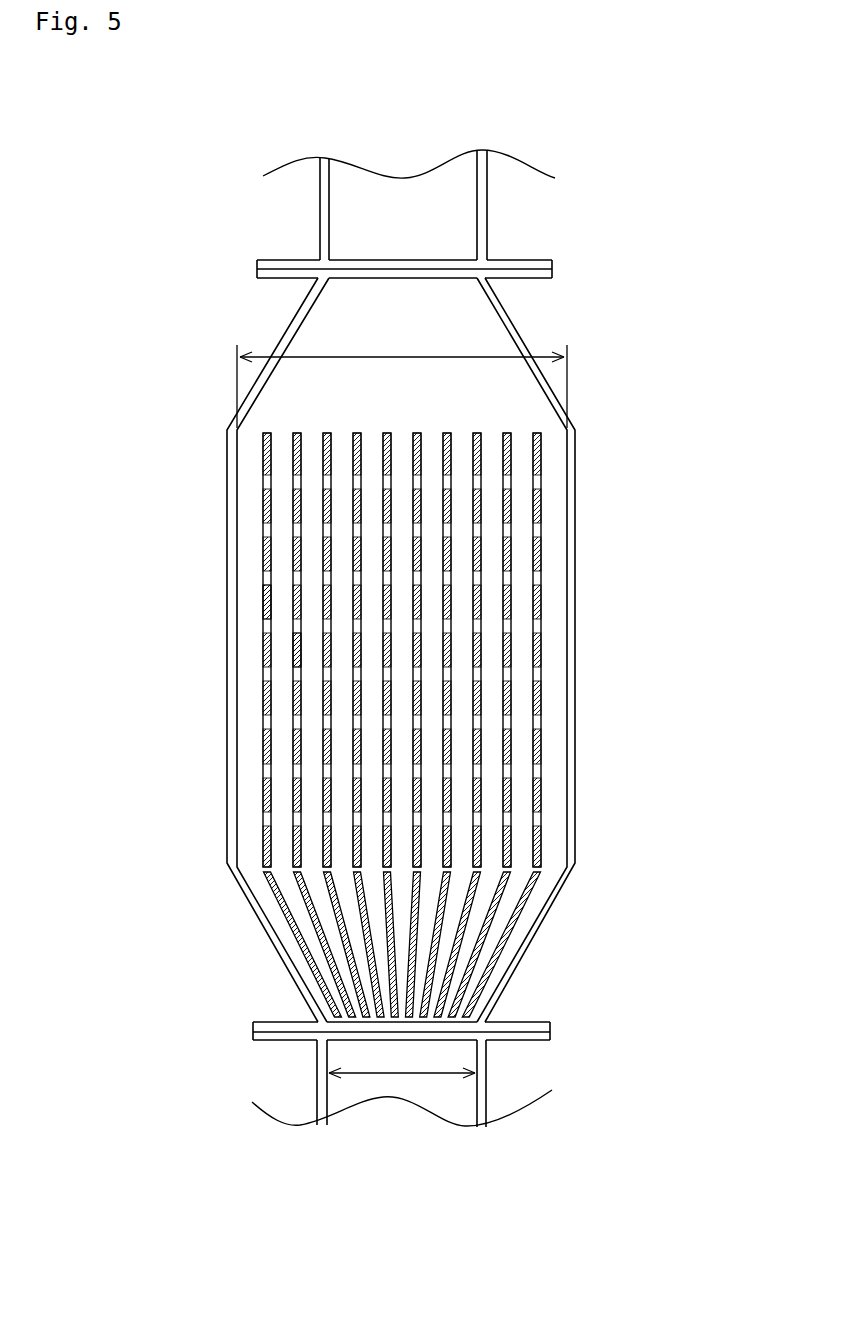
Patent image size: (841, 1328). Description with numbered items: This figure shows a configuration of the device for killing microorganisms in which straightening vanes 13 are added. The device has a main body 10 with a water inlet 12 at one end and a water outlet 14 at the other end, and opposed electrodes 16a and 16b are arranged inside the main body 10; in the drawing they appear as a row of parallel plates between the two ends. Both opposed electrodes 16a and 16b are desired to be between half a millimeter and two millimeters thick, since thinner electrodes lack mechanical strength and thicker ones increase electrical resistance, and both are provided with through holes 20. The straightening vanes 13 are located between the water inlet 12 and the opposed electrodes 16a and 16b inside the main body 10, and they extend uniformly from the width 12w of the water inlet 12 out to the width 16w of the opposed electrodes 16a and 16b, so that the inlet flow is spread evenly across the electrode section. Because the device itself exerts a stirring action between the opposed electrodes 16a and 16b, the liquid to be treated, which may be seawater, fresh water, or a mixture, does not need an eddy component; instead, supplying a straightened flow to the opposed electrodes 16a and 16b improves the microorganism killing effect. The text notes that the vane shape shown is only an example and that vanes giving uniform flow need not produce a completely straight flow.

The main body 10 is at (575, 570).
The water inlet 12 is at (437, 1033).
The width of the water inlet 12w is at (383, 1077).
The straightening vanes 13 is at (510, 919).
The water outlet 14 is at (407, 269).
The opposed electrode 16a is at (263, 602).
The opposed electrode 16b is at (294, 659).
The width of the opposed electrodes 16w is at (402, 374).
The through holes 20 is at (265, 530).